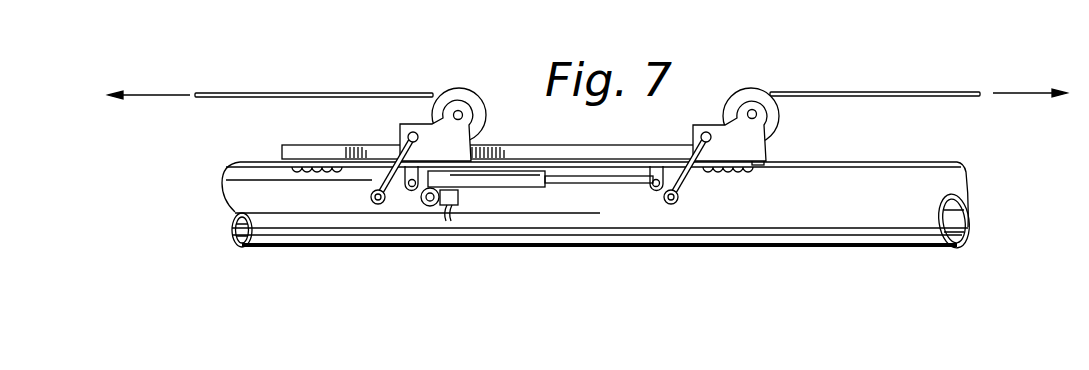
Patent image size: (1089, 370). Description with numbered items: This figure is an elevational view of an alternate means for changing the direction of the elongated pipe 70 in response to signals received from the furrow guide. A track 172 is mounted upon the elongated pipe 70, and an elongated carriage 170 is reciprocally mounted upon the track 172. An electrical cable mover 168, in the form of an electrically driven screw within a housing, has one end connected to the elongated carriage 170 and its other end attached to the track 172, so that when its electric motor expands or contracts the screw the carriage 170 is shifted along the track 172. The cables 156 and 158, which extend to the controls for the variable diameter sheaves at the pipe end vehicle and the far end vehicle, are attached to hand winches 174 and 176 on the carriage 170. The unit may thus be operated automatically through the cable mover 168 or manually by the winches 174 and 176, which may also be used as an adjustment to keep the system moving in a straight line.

The elongated pipe 70 is at (826, 247).
The cable 156 is at (905, 92).
The cable 158 is at (330, 92).
The electrical cable mover 168 is at (545, 186).
The elongated carriage 170 is at (665, 156).
The track 172 is at (379, 155).
The hand winch 174 is at (754, 93).
The hand winch 176 is at (488, 70).